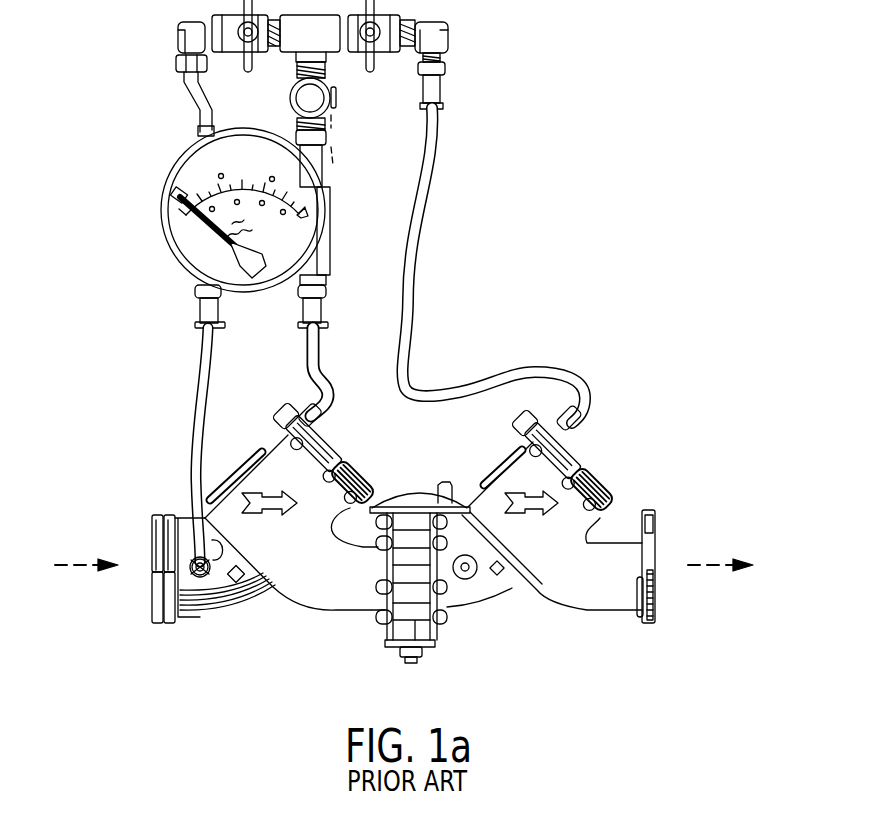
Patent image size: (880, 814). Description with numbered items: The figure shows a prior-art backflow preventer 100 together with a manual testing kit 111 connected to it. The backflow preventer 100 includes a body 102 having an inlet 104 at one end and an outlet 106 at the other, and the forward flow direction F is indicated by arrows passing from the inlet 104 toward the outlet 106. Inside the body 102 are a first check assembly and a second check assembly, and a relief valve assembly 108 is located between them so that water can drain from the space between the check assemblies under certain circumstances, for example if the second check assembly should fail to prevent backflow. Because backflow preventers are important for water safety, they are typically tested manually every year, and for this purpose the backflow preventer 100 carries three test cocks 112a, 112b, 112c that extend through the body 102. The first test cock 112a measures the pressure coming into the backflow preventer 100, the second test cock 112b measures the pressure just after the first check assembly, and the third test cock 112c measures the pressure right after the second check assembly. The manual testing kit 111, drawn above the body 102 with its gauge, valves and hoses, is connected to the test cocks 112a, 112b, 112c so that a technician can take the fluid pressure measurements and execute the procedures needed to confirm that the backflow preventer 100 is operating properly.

The backflow preventer 100 is at (640, 287).
The body 102 is at (601, 612).
The inlet 104 is at (150, 593).
The outlet 106 is at (655, 587).
The relief valve assembly 108 is at (426, 648).
The manual testing kit 111 is at (120, 42).
The first test cock 112a is at (206, 574).
The second test cock 112b is at (318, 424).
The third test cock 112c is at (580, 422).